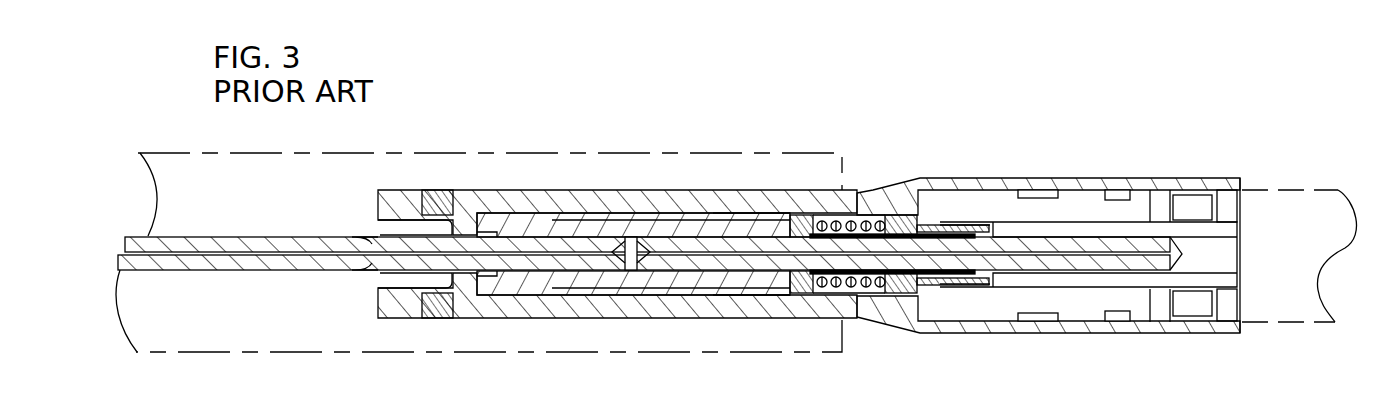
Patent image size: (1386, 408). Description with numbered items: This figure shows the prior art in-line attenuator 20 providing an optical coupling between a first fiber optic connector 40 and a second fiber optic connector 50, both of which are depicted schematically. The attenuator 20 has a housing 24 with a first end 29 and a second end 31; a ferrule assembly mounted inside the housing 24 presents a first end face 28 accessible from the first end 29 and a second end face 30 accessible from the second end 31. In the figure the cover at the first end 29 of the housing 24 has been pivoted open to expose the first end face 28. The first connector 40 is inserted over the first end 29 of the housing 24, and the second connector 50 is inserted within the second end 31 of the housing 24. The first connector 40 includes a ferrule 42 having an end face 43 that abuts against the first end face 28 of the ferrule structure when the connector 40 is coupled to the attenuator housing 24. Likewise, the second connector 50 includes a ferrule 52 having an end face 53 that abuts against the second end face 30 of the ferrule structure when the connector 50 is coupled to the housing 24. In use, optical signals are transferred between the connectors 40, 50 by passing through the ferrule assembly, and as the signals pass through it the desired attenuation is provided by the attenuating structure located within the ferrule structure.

The in-line attenuator 20 is at (864, 130).
The housing 24 is at (1025, 170).
The first end face 28 is at (352, 267).
The first end 29 is at (378, 312).
The second end face 30 is at (913, 250).
The second end 31 is at (1242, 182).
The first fiber optic connector 40 is at (467, 153).
The ferrule 42 is at (208, 272).
The end face 43 is at (358, 236).
The second fiber optic connector 50 is at (1318, 188).
The ferrule 52 is at (1100, 272).
The end face 53 is at (903, 262).